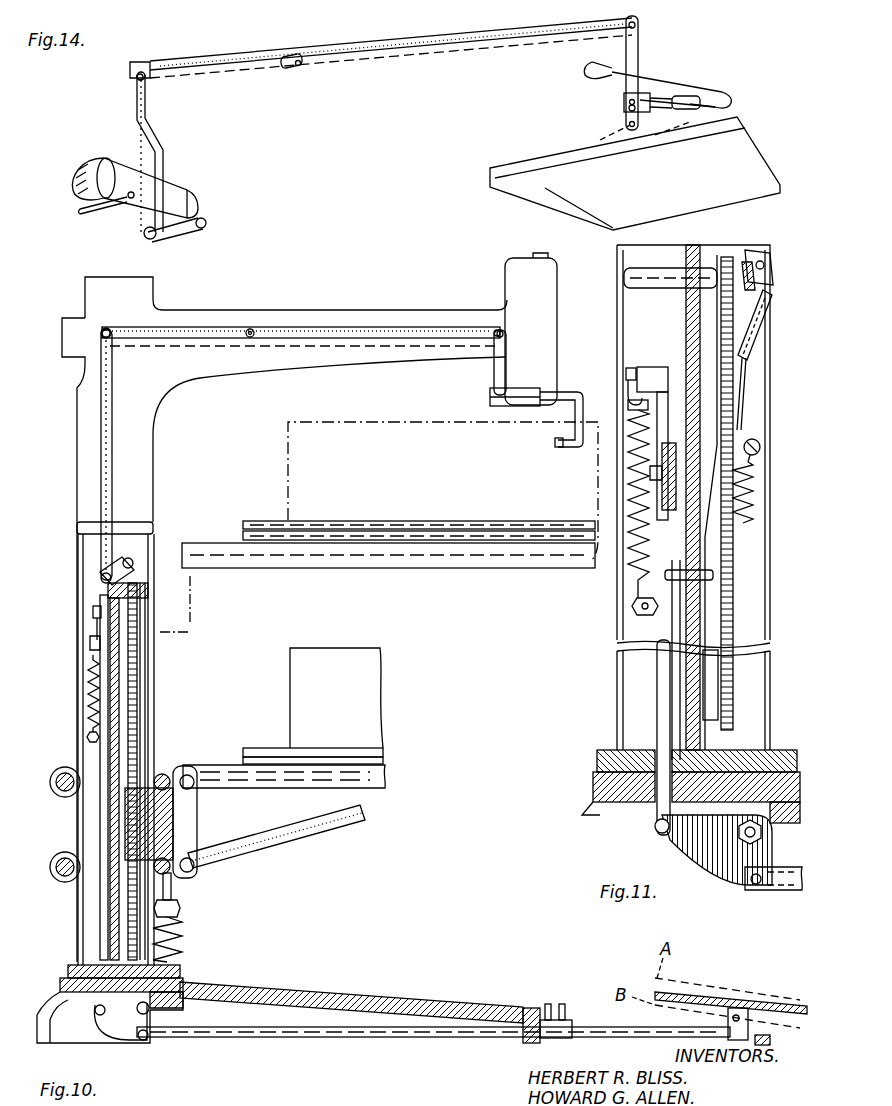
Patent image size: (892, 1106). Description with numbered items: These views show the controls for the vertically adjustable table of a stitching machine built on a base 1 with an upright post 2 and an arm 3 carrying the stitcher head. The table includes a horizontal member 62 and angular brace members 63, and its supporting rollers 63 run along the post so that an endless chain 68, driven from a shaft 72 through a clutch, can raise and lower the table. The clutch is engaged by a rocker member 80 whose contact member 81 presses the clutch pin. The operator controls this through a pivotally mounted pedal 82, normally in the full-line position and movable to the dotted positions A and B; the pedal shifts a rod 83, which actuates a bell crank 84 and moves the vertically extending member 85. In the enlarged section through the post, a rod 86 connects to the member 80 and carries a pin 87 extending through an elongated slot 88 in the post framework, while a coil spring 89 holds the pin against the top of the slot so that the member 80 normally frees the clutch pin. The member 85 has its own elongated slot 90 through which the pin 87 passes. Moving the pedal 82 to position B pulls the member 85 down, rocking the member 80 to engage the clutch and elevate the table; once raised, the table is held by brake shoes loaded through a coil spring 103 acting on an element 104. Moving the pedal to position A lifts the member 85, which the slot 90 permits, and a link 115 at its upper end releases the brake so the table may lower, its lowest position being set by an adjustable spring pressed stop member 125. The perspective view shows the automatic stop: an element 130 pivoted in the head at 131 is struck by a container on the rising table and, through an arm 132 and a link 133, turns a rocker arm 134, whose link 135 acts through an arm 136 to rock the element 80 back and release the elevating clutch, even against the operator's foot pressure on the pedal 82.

In FIG. 10, the base 1 is at (258, 994).
In FIG. 10, the post 2 is at (150, 692).
In FIG. 10, the arm 3 is at (350, 362).
In FIG. 10, the horizontal member 62 is at (312, 785).
In FIG. 10, the angular brace members / rollers 63 is at (330, 830).
In FIG. 10, the endless chain 68 is at (140, 752).
In FIG. 11, the endless chain 68 is at (733, 432).
In FIG. 11, the shaft 72 is at (666, 288).
In FIG. 14, the rocker member 80 is at (116, 175).
In FIG. 11, the rocker member 80 is at (770, 256).
In FIG. 11, the contact member 81 is at (745, 298).
In FIG. 10, the pedal 82 is at (660, 996).
In FIG. 10, the rod 83 is at (280, 1040).
In FIG. 11, the rod 83 is at (800, 891).
In FIG. 10, the bell crank 84 is at (160, 1020).
In FIG. 11, the bell crank 84 is at (682, 848).
In FIG. 10, the vertically extending member 85 is at (104, 792).
In FIG. 11, the vertically extending member 85 is at (660, 655).
In FIG. 10, the rod 86 is at (145, 620).
In FIG. 11, the rod 86 is at (745, 384).
In FIG. 11, the pin 87 is at (705, 586).
In FIG. 11, the elongated slot 88 is at (693, 603).
In FIG. 11, the coil spring 89 is at (755, 480).
In FIG. 11, the elongated slot 90 is at (634, 605).
In FIG. 10, the coil spring 103 is at (88, 680).
In FIG. 11, the coil spring 103 is at (632, 576).
In FIG. 10, the element 104 is at (92, 642).
In FIG. 11, the element 104 is at (628, 392).
In FIG. 10, the link 115 is at (92, 622).
In FIG. 11, the link 115 is at (668, 415).
In FIG. 10, the adjustable spring pressed stop member 125 is at (195, 873).
In FIG. 14, the element 130 is at (675, 76).
In FIG. 10, the element 130 is at (600, 386).
In FIG. 14, the pivot 131 is at (705, 104).
In FIG. 14, the arm 132 is at (626, 98).
In FIG. 10, the arm 132 is at (500, 408).
In FIG. 14, the link 133 is at (638, 50).
In FIG. 10, the link 133 is at (506, 356).
In FIG. 14, the rocker arm 134 is at (300, 65).
In FIG. 10, the rocker arm 134 is at (315, 327).
In FIG. 14, the link 135 is at (158, 142).
In FIG. 10, the link 135 is at (113, 415).
In FIG. 14, the arm 136 is at (183, 230).
In FIG. 10, the arm 136 is at (130, 562).